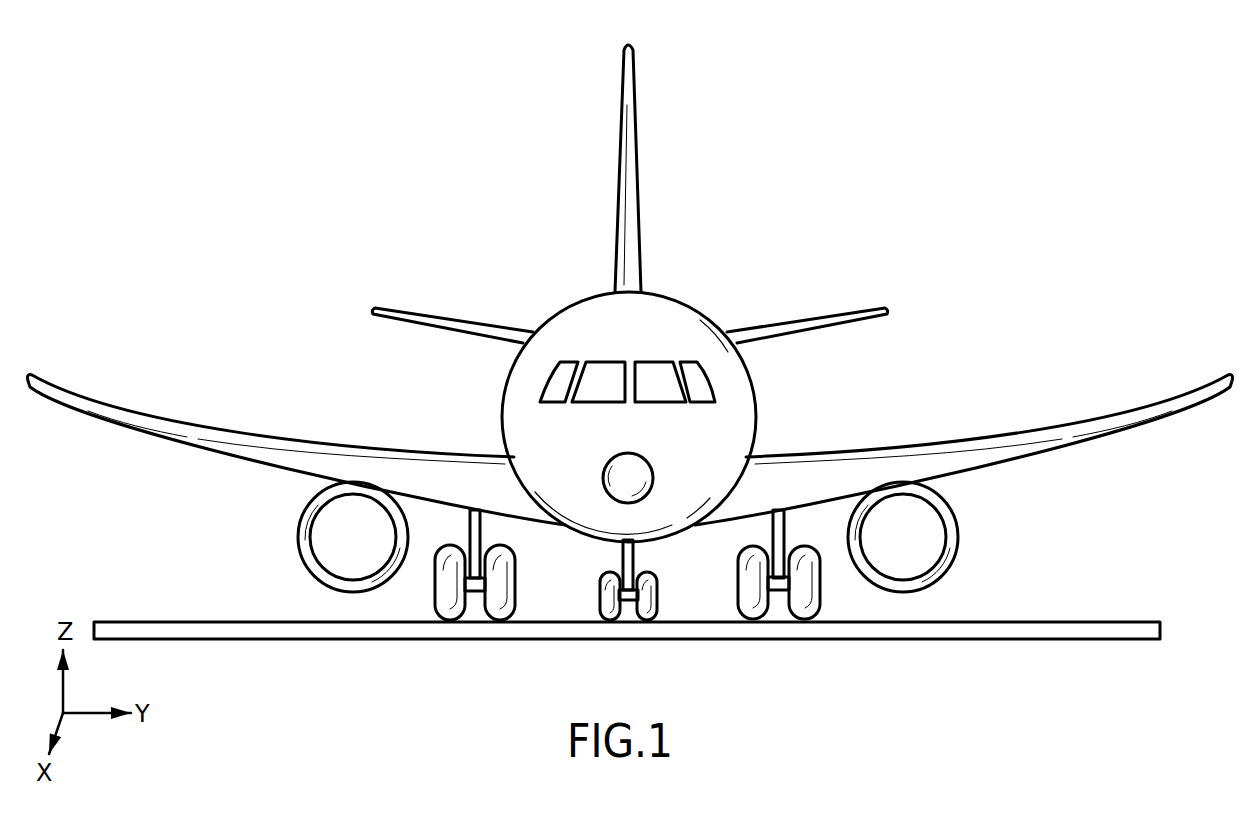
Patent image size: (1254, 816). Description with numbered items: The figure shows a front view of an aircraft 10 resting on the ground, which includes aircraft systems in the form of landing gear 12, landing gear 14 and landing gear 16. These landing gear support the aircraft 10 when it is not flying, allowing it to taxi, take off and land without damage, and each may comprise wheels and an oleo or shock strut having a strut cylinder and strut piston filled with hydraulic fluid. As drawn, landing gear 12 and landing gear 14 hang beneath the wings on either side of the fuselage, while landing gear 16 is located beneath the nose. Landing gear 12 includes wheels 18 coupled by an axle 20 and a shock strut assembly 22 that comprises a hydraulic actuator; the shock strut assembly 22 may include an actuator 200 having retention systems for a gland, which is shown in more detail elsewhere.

The aircraft 10 is at (462, 150).
The landing gear 12 is at (778, 570).
The landing gear 14 is at (437, 533).
The landing gear 16 is at (579, 618).
The wheels 18 is at (752, 603).
The axle 20 is at (780, 600).
The shock strut assembly 22 is at (773, 528).
The actuator 200 is at (613, 563).